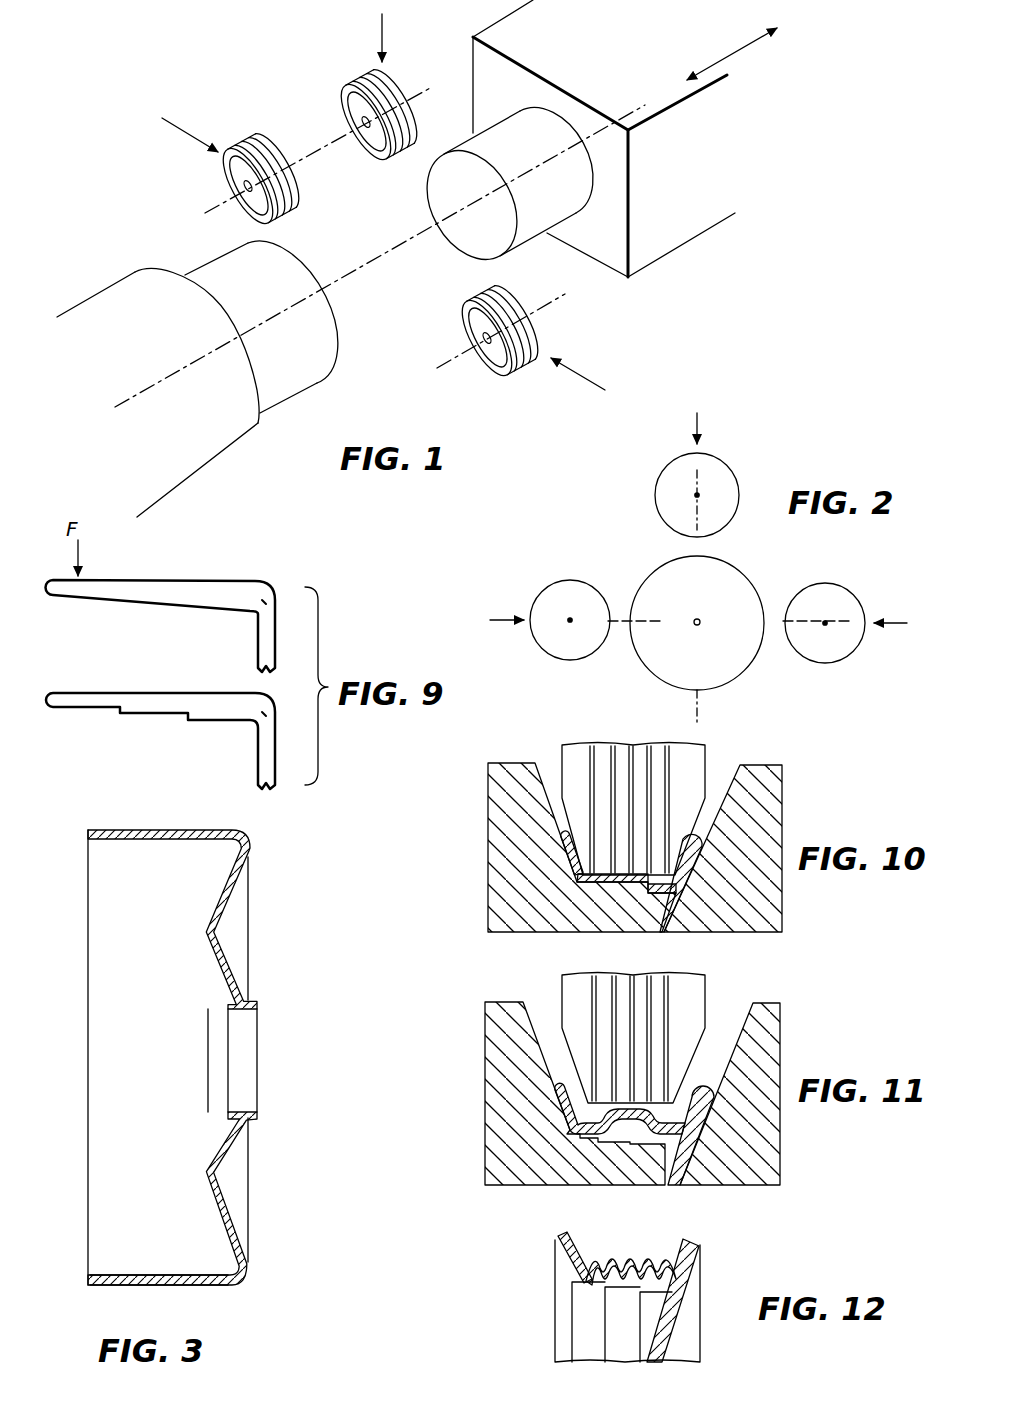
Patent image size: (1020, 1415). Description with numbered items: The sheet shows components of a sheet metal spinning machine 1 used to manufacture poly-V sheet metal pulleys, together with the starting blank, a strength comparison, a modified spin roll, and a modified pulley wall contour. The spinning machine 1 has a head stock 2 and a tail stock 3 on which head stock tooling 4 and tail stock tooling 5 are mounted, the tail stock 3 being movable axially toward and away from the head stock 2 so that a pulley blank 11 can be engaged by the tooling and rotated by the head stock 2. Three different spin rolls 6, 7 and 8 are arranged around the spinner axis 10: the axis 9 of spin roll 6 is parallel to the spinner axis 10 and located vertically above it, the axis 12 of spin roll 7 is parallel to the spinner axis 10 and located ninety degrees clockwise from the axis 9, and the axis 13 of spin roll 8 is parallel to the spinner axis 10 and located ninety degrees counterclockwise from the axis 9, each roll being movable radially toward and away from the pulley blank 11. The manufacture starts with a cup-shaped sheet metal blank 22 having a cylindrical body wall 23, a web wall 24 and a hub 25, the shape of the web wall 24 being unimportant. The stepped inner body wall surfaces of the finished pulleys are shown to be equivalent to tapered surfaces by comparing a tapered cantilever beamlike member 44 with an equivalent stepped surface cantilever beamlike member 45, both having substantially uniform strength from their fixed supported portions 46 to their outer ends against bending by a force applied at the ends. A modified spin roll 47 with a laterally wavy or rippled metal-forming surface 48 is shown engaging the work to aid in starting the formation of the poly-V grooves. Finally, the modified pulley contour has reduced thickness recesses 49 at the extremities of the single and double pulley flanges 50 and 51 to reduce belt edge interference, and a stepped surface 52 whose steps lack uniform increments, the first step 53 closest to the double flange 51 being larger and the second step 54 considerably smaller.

In FIG. 1, the sheet metal spinning machine 1 is at (700, 256).
In FIG. 1, the head stock 2 is at (125, 318).
In FIG. 1, the tail stock 3 is at (657, 148).
In FIG. 1, the head stock tooling 4 is at (292, 373).
In FIG. 1, the tail stock tooling 5 is at (458, 220).
In FIG. 1, the spin roll 6 is at (350, 90).
In FIG. 2, the spin roll 6 is at (715, 473).
In FIG. 1, the spin roll 7 is at (233, 173).
In FIG. 2, the spin roll 7 is at (678, 500).
In FIG. 1, the spin roll 8 is at (493, 362).
In FIG. 2, the spin roll 8 is at (565, 597).
In FIG. 1, the axis of roll 6 9 is at (362, 128).
In FIG. 2, the axis of roll 6 9 is at (695, 492).
In FIG. 1, the spinner axis 10 is at (363, 268).
In FIG. 2, the spinner axis 10 is at (705, 624).
In FIG. 2, the pulley blank 11 is at (736, 596).
In FIG. 1, the axis of spin roll 7 12 is at (463, 358).
In FIG. 2, the axis of spin roll 7 12 is at (828, 627).
In FIG. 1, the axis of spin roll 8 13 is at (226, 203).
In FIG. 2, the axis of spin roll 8 13 is at (566, 624).
In FIG. 3, the cup-shaped sheet metal blank 22 is at (252, 1280).
In FIG. 3, the body wall 23 is at (112, 1288).
In FIG. 3, the web wall 24 is at (215, 1168).
In FIG. 3, the hub 25 is at (258, 1003).
In FIG. 9, the tapered cantilever beamlike member 44 is at (225, 582).
In FIG. 9, the stepped surface cantilever beamlike member 45 is at (138, 716).
In FIG. 9, the fixed supported portion 46 is at (253, 600).
In FIG. 10, the spin roll 47 is at (558, 757).
In FIG. 11, the spin roll 47 is at (558, 993).
In FIG. 10, the rippled metal-forming surface 48 is at (650, 870).
In FIG. 11, the rippled metal-forming surface 48 is at (640, 1100).
In FIG. 12, the reduced thickness recess 49 is at (563, 1240).
In FIG. 12, the single pulley flange 50 is at (560, 1239).
In FIG. 12, the double pulley flange 51 is at (700, 1250).
In FIG. 12, the stepped surface 52 is at (586, 1290).
In FIG. 12, the first step 53 is at (640, 1298).
In FIG. 12, the second step 54 is at (600, 1289).